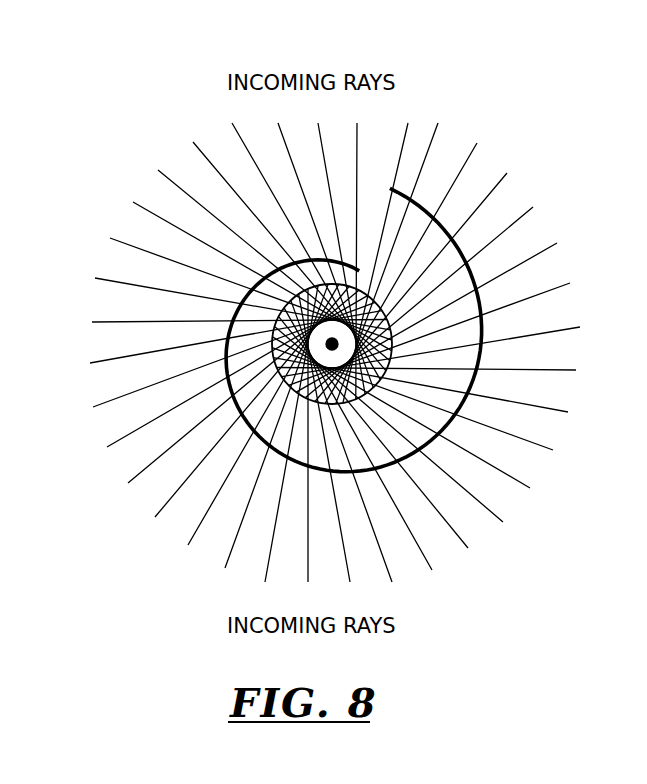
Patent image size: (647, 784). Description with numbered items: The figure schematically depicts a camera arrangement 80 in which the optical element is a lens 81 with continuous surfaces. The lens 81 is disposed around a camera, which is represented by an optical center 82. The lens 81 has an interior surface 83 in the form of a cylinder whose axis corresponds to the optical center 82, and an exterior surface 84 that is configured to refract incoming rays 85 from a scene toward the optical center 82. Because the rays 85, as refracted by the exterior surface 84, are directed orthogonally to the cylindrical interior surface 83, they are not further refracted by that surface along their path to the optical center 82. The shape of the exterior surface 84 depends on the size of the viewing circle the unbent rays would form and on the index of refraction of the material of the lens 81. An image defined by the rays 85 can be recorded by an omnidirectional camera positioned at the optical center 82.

The camera arrangement 80 is at (110, 93).
The lens 81 is at (460, 247).
The optical center 82 is at (233, 322).
The interior surface 83 is at (233, 327).
The exterior surface 84 is at (488, 352).
The rays 85 is at (462, 545).